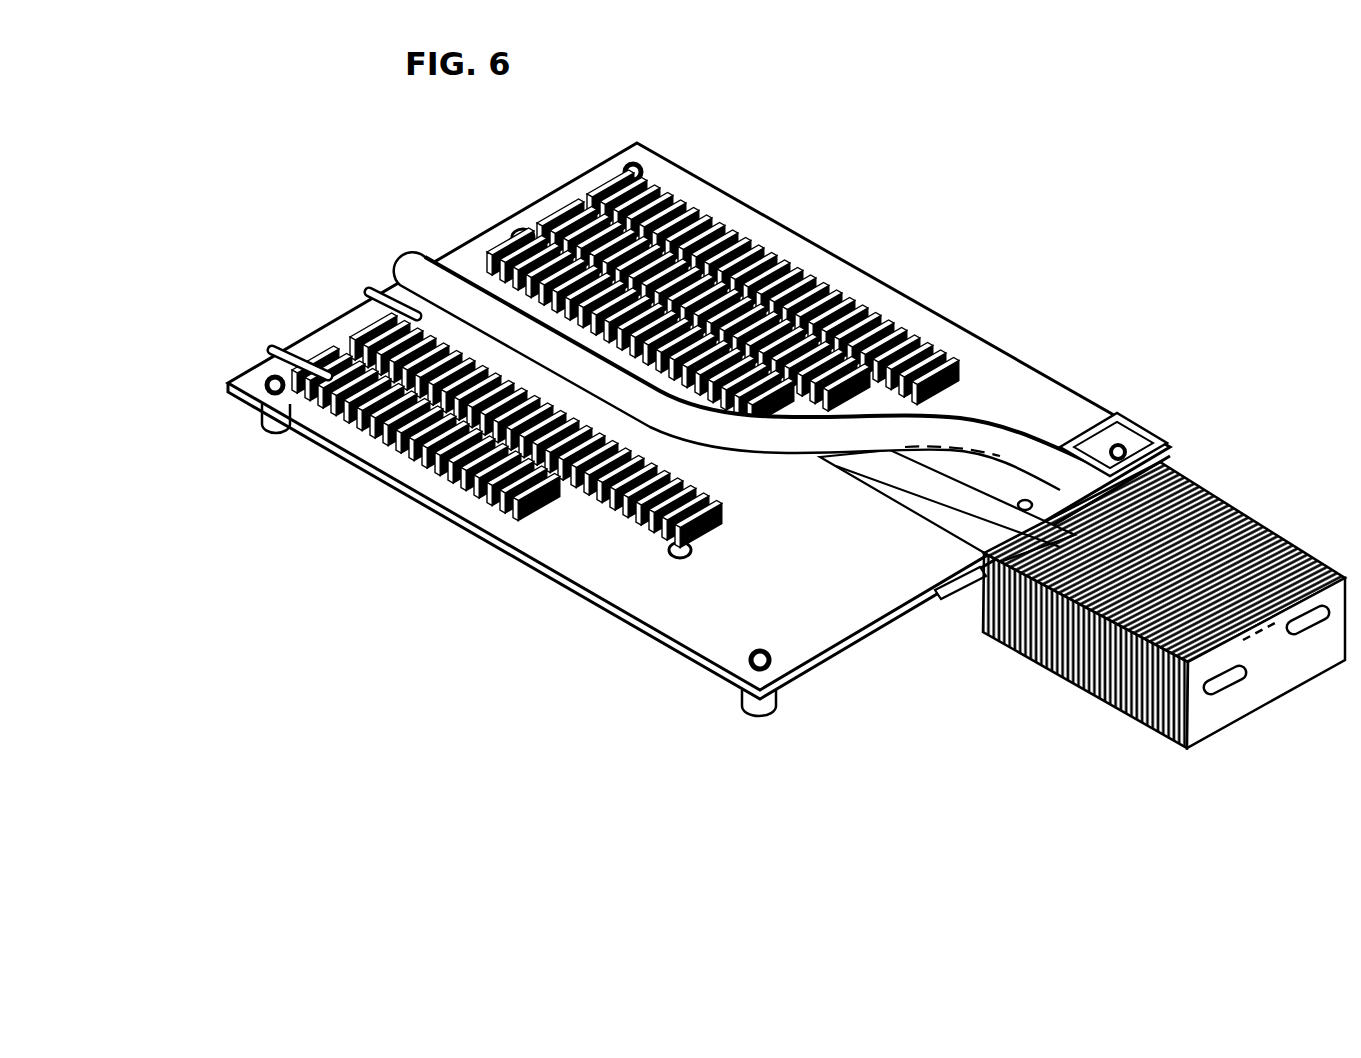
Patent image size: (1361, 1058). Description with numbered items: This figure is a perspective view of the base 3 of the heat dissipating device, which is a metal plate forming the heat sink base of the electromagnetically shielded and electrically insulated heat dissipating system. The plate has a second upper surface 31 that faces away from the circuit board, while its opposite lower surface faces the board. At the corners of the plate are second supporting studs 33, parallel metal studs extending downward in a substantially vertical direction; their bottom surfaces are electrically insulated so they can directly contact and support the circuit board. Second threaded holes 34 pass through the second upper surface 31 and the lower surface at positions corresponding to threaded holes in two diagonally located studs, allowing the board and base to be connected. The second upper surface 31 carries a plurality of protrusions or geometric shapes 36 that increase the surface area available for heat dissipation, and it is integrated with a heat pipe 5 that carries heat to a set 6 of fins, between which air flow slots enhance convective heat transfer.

The base of the heat dissipating device 3 is at (560, 583).
The second upper surface 31 is at (707, 600).
The second supporting stud 33 is at (262, 408).
The second threaded hole 34 is at (650, 160).
The protrusions or geometric shapes 36 is at (882, 287).
The heat pipe 5 is at (1000, 441).
The set of fins, pins, or other geometric shapes 6 is at (1067, 670).